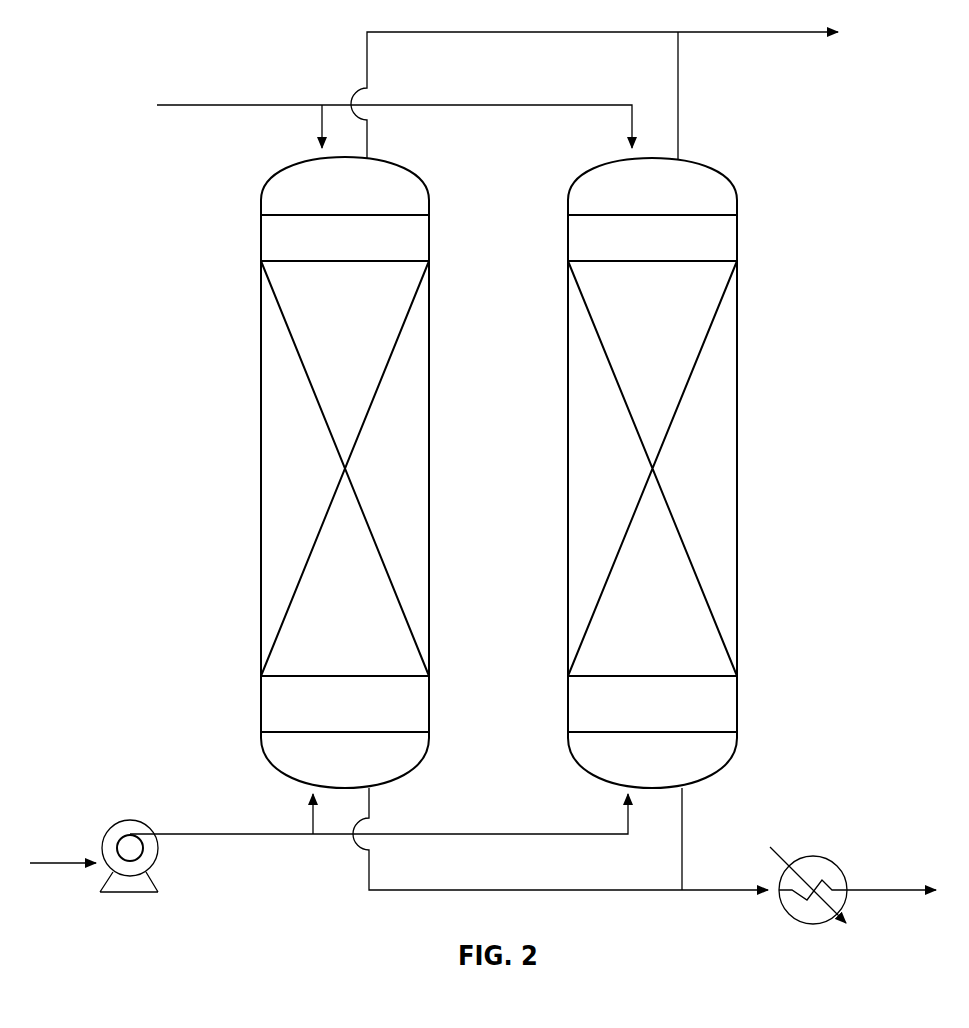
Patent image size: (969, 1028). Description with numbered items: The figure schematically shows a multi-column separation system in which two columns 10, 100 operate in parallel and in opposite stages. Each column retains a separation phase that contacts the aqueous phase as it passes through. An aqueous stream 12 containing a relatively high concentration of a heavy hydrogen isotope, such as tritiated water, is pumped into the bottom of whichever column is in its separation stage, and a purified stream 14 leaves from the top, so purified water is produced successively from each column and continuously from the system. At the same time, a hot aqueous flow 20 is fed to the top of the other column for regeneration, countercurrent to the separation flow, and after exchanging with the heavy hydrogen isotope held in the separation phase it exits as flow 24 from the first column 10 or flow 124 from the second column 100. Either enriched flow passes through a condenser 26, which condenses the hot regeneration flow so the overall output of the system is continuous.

The column 10 is at (260, 348).
The second column 100 is at (568, 352).
The hot aqueous flow 20 is at (252, 105).
The purified stream 14 is at (772, 32).
The aqueous stream 12 is at (228, 834).
The outlet 24 is at (369, 884).
The flow 124 is at (682, 866).
The condenser 26 is at (800, 917).